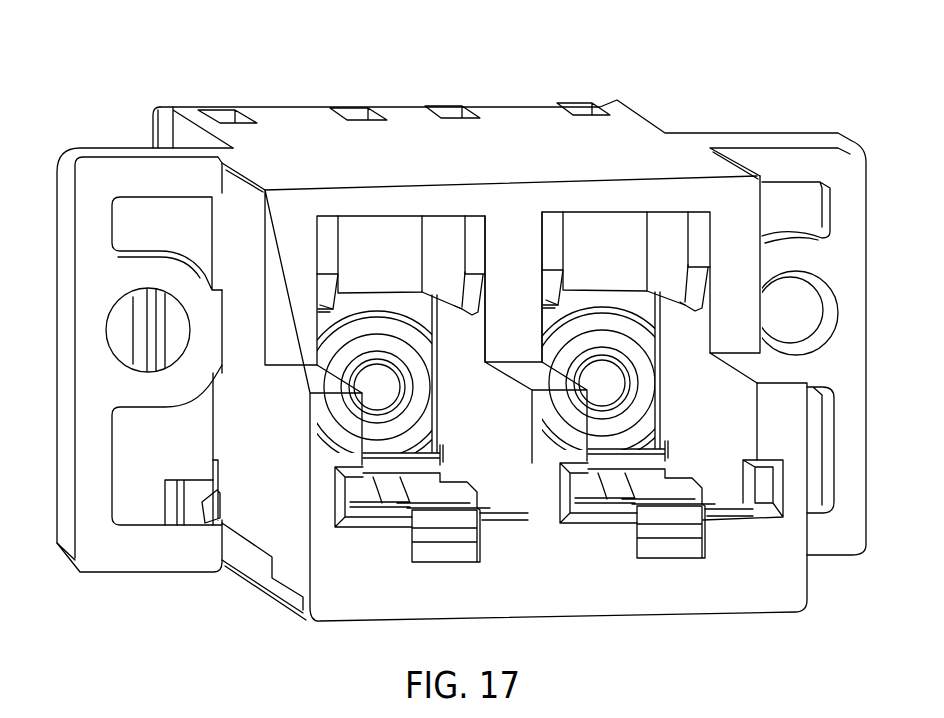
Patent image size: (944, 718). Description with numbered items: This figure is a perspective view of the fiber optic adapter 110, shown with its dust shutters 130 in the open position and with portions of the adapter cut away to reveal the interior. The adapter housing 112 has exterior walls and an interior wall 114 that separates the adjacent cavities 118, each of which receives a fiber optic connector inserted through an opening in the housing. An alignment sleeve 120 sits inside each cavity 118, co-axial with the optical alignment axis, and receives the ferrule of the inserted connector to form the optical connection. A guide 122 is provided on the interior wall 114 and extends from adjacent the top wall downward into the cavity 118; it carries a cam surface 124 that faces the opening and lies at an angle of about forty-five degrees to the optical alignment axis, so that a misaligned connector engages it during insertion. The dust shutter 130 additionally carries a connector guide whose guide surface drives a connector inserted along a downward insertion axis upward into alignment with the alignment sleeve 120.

The fiber optic adapter 110 is at (461, 346).
The adapter housing 112 is at (461, 360).
The interior wall 114 is at (514, 253).
The cavity 118 is at (398, 261).
The alignment sleeve 120 is at (418, 400).
The guide 122 is at (326, 210).
The cam surface 124 is at (465, 297).
The dust shutter 130 is at (438, 546).